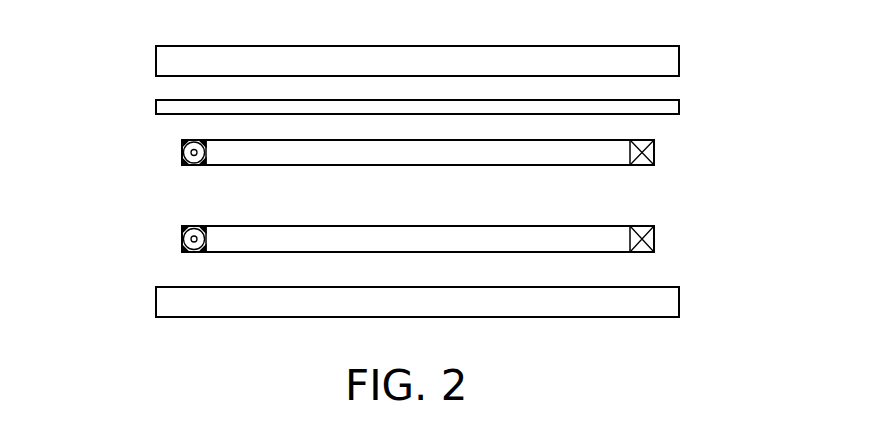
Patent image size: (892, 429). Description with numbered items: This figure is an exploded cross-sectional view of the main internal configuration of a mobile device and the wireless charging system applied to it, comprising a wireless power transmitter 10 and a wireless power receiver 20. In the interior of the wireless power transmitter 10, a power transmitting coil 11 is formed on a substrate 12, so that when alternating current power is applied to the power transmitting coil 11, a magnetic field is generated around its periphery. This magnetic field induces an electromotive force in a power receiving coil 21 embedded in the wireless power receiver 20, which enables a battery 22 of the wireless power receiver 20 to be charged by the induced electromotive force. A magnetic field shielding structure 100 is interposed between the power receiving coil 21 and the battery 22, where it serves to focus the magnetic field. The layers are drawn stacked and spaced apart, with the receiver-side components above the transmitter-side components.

The magnetic field shielding structure 100 is at (156, 106).
The wireless power receiver 20 is at (757, 55).
The battery 22 is at (679, 57).
The power receiving coil 21 is at (654, 146).
The wireless power transmitter 10 is at (757, 235).
The power transmitting coil 11 is at (654, 237).
The substrate 12 is at (673, 300).